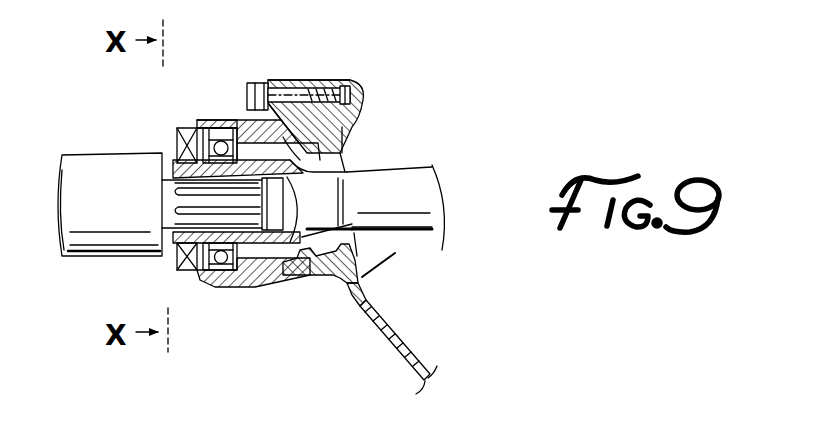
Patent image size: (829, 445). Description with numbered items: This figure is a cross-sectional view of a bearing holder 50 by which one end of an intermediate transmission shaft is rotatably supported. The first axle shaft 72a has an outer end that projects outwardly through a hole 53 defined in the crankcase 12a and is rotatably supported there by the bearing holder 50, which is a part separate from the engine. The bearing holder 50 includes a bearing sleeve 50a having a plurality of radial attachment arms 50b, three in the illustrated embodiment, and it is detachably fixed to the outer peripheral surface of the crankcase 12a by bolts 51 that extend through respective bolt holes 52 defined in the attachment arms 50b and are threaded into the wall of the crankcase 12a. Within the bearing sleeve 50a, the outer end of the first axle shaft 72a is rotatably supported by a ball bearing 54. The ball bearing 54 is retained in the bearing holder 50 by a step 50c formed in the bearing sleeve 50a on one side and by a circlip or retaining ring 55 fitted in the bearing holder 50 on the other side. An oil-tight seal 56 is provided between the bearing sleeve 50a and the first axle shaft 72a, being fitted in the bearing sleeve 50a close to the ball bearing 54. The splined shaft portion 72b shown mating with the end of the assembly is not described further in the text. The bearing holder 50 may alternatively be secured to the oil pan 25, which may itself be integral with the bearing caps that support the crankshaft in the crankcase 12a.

The bearing holder 50 is at (212, 112).
The bearing sleeve 50a is at (203, 125).
The radial attachment arm 50b is at (280, 80).
The step 50c is at (236, 114).
The bolt 51 is at (250, 83).
The bolt hole 52 is at (349, 80).
The hole 53 is at (337, 183).
The ball bearing 54 is at (229, 282).
The retaining ring 55 is at (200, 283).
The oil-tight seal 56 is at (176, 143).
The first axle shaft 72a is at (402, 188).
The splined shaft 72b is at (107, 245).
The crankcase 12a is at (320, 272).
The oil pan 25 is at (410, 365).